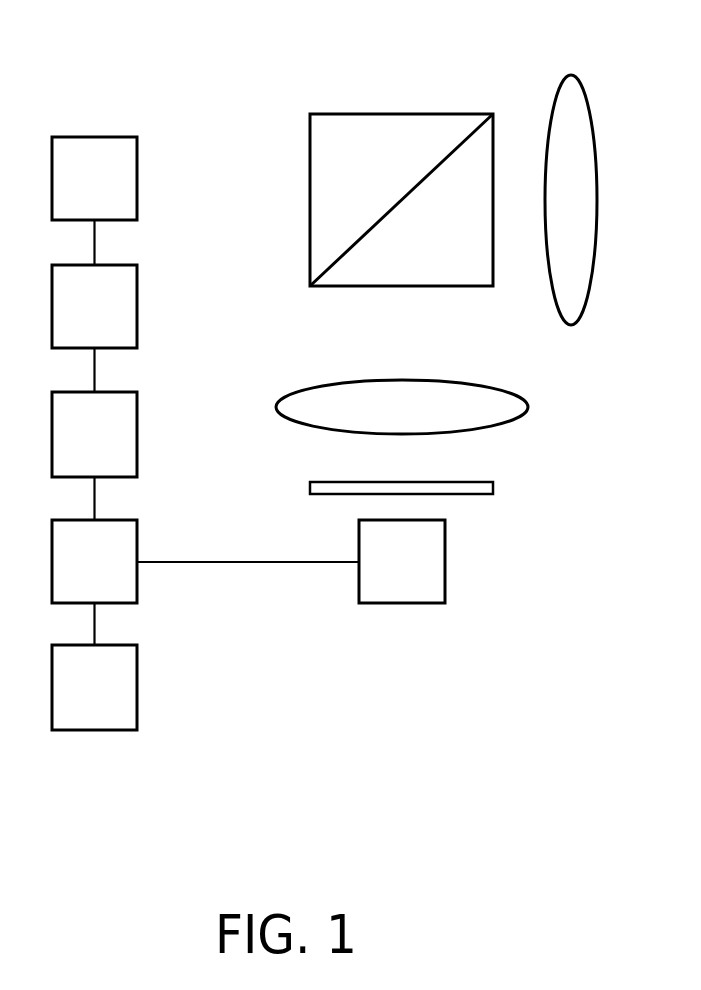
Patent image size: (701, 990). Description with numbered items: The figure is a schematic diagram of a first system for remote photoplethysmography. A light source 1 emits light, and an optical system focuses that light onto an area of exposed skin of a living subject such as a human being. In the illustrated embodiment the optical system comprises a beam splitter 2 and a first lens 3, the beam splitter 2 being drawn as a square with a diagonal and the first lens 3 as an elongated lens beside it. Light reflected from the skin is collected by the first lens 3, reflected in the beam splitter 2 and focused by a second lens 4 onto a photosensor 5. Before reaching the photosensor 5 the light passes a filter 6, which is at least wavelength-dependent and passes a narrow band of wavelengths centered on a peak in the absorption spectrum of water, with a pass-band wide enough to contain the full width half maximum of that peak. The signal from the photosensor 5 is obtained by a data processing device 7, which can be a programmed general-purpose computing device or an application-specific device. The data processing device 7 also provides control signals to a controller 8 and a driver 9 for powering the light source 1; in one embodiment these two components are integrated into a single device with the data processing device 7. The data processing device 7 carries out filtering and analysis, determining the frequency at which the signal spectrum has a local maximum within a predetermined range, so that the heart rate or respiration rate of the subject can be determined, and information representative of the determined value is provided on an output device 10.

The light source 1 is at (94, 178).
The beam splitter 2 is at (423, 127).
The first lens 3 is at (568, 85).
The second lens 4 is at (516, 404).
The photosensor 5 is at (402, 561).
The filter 6 is at (478, 487).
The data processing device 7 is at (94, 561).
The controller 8 is at (94, 434).
The driver 9 is at (94, 306).
The output device 10 is at (94, 687).